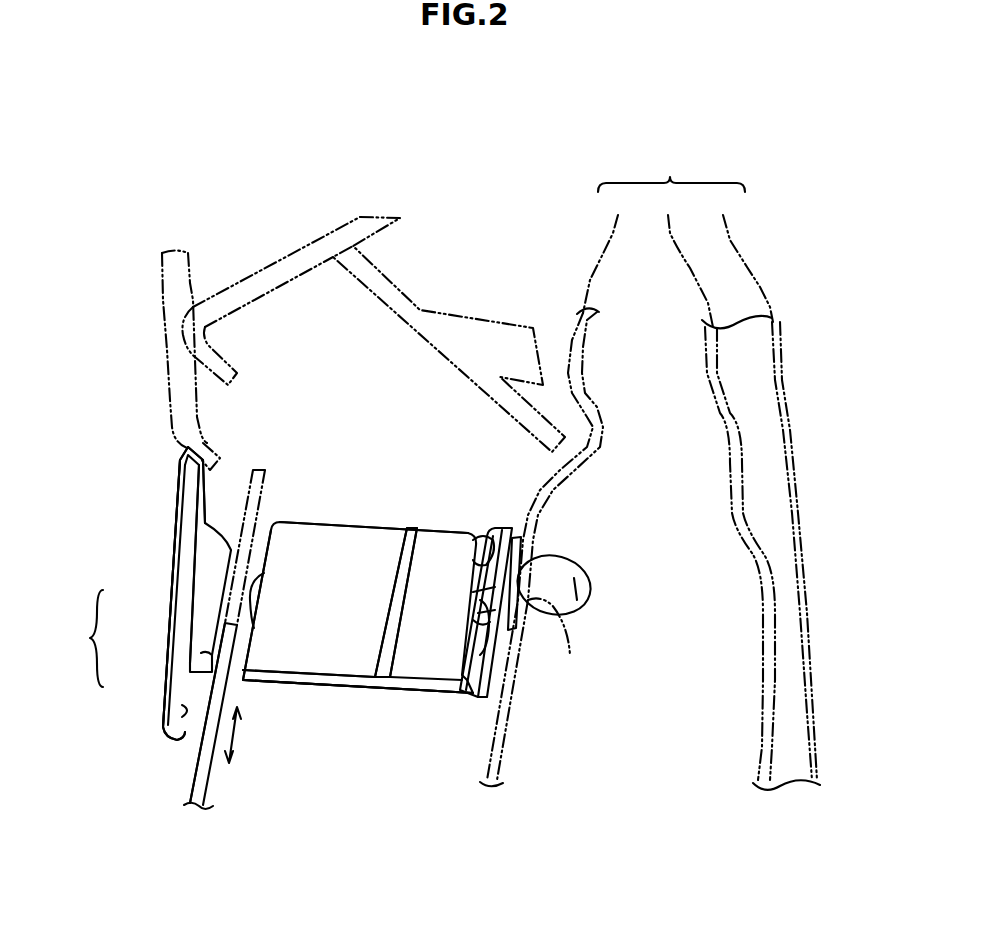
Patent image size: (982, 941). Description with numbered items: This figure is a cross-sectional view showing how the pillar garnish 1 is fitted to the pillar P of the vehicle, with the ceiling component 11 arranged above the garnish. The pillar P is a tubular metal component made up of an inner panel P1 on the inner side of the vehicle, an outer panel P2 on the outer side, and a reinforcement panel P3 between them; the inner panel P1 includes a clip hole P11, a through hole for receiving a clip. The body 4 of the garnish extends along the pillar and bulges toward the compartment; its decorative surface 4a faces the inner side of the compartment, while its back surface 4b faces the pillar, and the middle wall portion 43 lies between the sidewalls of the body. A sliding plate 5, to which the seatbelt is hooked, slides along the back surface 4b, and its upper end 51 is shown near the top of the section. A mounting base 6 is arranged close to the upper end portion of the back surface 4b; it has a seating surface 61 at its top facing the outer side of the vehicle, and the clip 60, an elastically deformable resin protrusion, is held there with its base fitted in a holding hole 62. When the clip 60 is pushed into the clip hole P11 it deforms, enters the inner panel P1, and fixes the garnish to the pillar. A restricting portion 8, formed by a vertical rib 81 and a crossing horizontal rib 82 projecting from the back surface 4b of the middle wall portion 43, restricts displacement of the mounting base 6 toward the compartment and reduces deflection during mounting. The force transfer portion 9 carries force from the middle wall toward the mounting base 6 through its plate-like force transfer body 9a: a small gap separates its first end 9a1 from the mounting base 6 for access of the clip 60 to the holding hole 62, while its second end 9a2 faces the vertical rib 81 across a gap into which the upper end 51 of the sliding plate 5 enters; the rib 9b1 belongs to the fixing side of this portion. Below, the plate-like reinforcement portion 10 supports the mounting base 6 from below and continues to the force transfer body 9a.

The pillar garnish 1 is at (408, 811).
The ceiling component 11 is at (160, 264).
The body 4 is at (187, 477).
The middle wall portion 43 is at (184, 587).
The decorative surface 4a is at (177, 532).
The back surface 4b is at (185, 710).
The restricting portion 8 is at (84, 638).
The vertical rib 81 is at (207, 602).
The horizontal rib 82 is at (197, 670).
The sliding plate 5 is at (207, 783).
The upper end 51 is at (217, 710).
The force transfer portion 9 is at (347, 508).
The force transfer body 9a is at (385, 538).
The first end 9a1 is at (488, 652).
The second end 9a2 is at (253, 613).
The frame rib 9b1 is at (398, 598).
The reinforcement portion 10 is at (352, 683).
The mounting base 6 is at (506, 509).
The seating surface 61 is at (517, 553).
The holding hole 62 is at (495, 565).
The clip 60 is at (564, 567).
The pillar P is at (671, 170).
The inner panel P1 is at (556, 489).
The outer panel P2 is at (763, 486).
The reinforcement panel P3 is at (738, 491).
The clip hole P11 is at (560, 646).